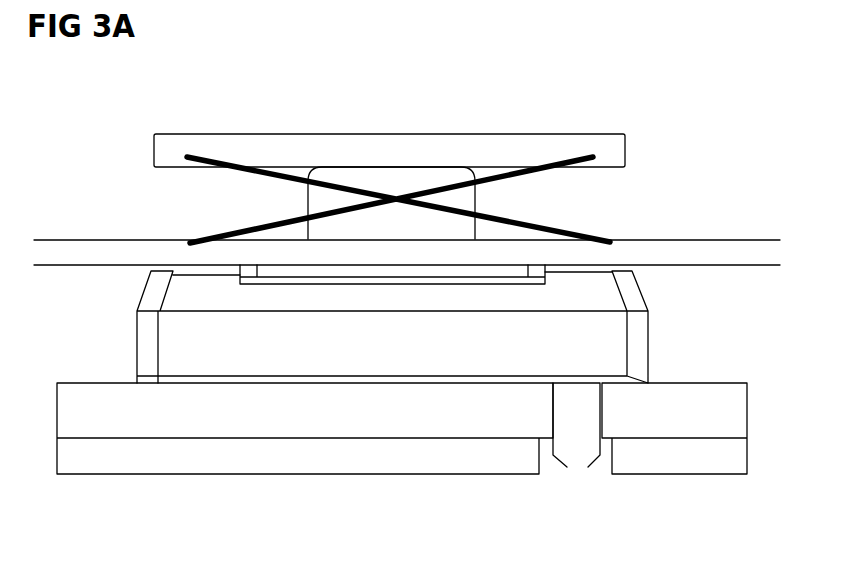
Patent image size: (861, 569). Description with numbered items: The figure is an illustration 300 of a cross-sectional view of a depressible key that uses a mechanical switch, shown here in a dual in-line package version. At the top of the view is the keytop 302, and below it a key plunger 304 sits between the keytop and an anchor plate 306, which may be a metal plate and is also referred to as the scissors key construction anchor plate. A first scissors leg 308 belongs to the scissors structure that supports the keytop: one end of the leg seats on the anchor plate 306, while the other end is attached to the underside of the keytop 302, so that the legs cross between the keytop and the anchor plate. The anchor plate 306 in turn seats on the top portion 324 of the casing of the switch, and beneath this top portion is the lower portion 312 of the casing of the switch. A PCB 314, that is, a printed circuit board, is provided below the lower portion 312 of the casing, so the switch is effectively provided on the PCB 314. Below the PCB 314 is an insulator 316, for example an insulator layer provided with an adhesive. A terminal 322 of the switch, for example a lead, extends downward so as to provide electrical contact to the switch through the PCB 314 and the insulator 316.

The illustration 300 is at (725, 92).
The keytop 302 is at (418, 152).
The key plunger 304 is at (466, 185).
The anchor plate 306 is at (687, 243).
The first scissors leg 308 is at (225, 167).
The lower portion of a casing of the switch 312 is at (157, 320).
The PCB 314 is at (688, 393).
The insulator 316 is at (197, 463).
The terminal 322 is at (580, 447).
The top portion of the casing of the switch 324 is at (437, 291).